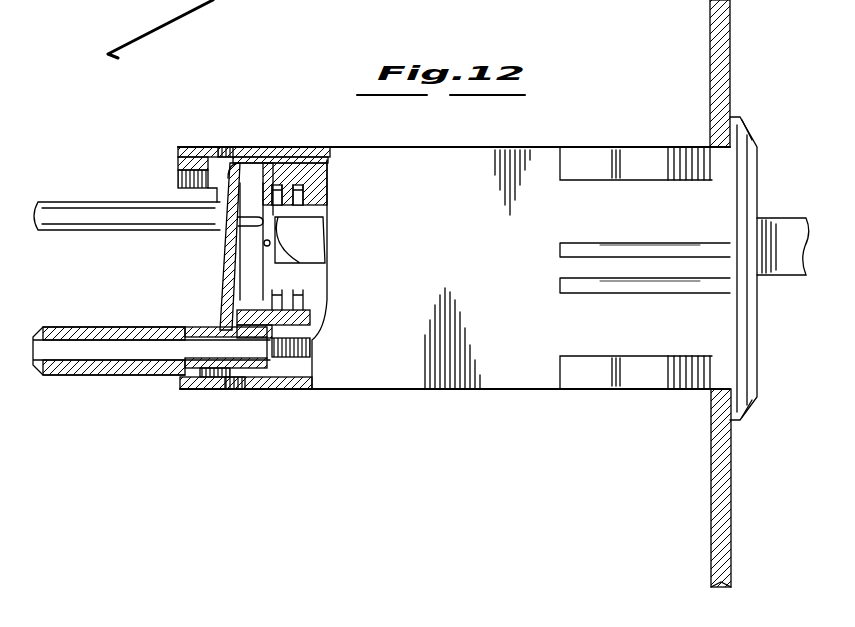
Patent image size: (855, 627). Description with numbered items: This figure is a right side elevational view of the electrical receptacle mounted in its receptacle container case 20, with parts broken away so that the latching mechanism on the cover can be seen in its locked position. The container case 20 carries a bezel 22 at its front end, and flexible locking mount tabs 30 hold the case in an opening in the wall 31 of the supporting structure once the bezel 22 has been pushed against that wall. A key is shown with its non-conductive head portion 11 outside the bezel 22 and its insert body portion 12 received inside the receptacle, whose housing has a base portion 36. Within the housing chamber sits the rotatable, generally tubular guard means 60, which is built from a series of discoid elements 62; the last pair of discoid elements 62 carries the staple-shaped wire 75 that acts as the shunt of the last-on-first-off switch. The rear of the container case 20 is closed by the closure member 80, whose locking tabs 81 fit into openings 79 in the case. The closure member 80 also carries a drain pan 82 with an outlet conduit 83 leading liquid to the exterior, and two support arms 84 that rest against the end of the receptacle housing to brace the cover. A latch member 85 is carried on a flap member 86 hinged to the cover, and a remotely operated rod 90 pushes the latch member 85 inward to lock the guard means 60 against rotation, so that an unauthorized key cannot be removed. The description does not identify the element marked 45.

The head portion 11 is at (780, 218).
The insert body portion 12 is at (300, 240).
The receptacle container case 20 is at (505, 138).
The bezel 22 is at (760, 157).
The flexible locking mount tabs 30 is at (662, 147).
The wall 31 is at (730, 25).
The base portion 36 is at (305, 320).
The threaded portion 45 is at (310, 342).
The contact pin protect sleeve or guard means 60 is at (256, 282).
The discoid elements 62 is at (298, 190).
The staple-shaped wire 75 is at (263, 245).
The openings 79 is at (250, 147).
The closure member 80 is at (178, 168).
The locking tabs 81 is at (235, 147).
The drain pan 82 is at (285, 370).
The outlet conduit 83 is at (107, 377).
The support arms 84 is at (255, 225).
The latch member 85 is at (258, 175).
The flap member 86 is at (224, 256).
The rod 90 is at (100, 207).